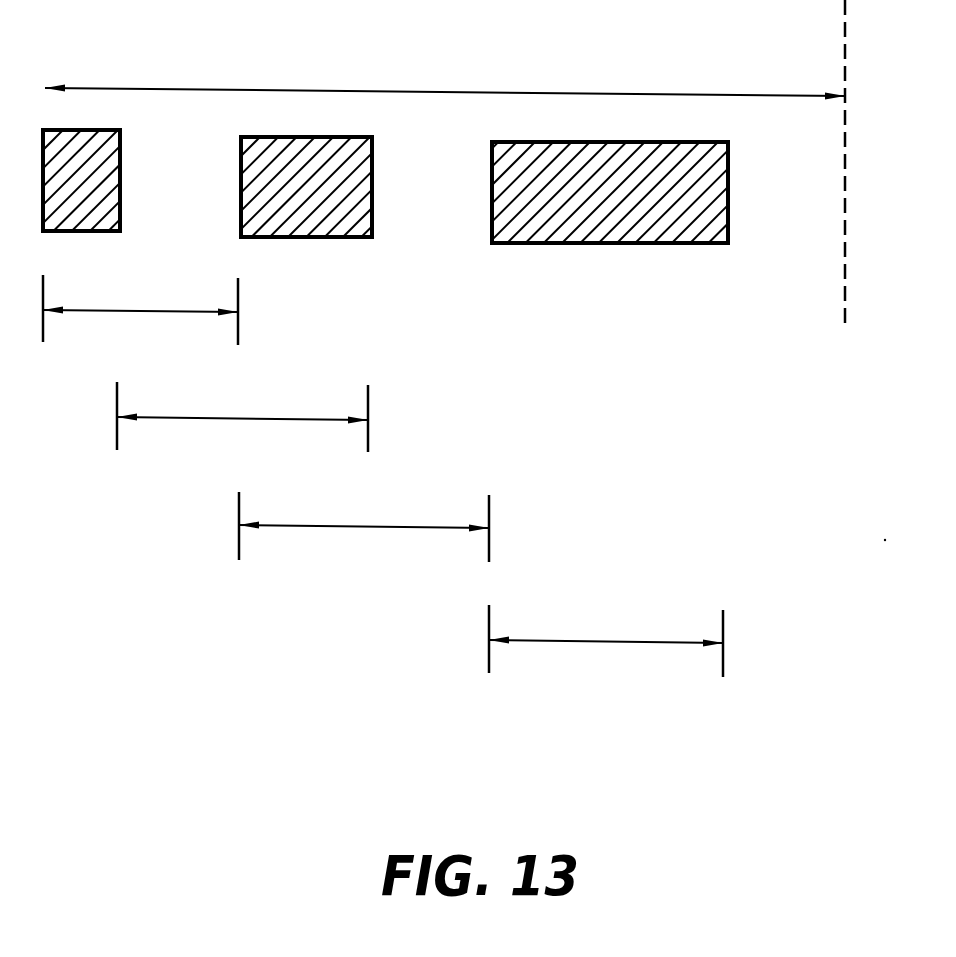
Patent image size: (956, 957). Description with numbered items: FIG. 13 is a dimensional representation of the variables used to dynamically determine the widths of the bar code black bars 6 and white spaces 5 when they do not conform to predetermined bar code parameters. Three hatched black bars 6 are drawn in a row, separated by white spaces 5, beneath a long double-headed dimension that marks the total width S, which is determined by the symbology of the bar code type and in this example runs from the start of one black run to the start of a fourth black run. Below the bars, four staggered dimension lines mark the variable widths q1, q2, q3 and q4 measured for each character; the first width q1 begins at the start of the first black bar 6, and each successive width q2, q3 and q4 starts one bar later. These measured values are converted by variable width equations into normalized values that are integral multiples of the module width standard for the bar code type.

The white space 5 is at (485, 128).
The black bar 6 is at (104, 120).
The total width S is at (445, 162).
The first variable width q1 is at (140, 315).
The second variable width q2 is at (242, 422).
The third variable width q3 is at (364, 535).
The fourth variable width q4 is at (606, 649).